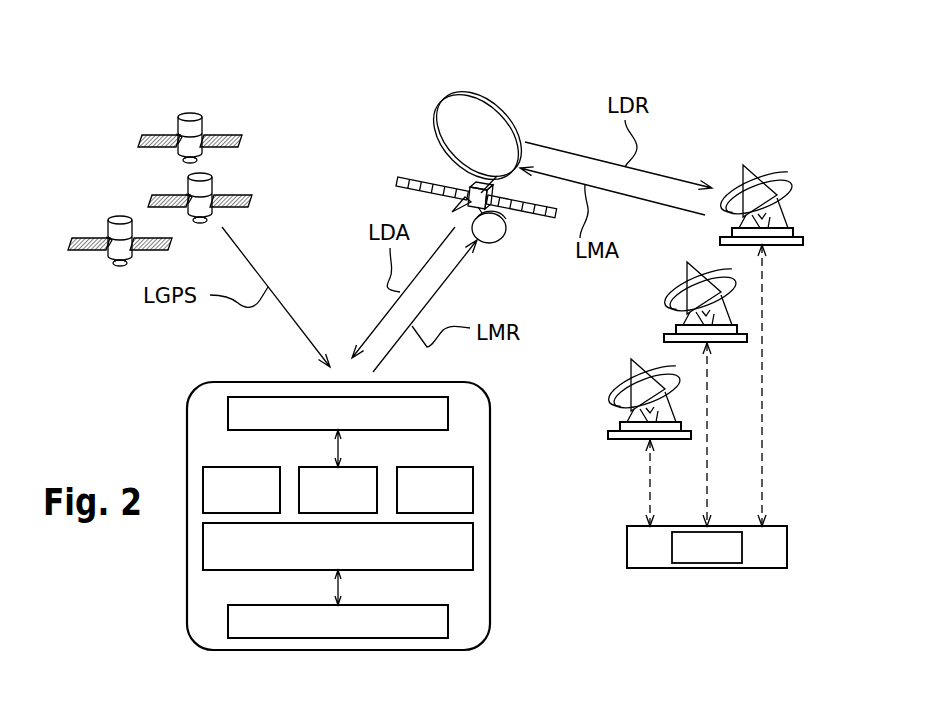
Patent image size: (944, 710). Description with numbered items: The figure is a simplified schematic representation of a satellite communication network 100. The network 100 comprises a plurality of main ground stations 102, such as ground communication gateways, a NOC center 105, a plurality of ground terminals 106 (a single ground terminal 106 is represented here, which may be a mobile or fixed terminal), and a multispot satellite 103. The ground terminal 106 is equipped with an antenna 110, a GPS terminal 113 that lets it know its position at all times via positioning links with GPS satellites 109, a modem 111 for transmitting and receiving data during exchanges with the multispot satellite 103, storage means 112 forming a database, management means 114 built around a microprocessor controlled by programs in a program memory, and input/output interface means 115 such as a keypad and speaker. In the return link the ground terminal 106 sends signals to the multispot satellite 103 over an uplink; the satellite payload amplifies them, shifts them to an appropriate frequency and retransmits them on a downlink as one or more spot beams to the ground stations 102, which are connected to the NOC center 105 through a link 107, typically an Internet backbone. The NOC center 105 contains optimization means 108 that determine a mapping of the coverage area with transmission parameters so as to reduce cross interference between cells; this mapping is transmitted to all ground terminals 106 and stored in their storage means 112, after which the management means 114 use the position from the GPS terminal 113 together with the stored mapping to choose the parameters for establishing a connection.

The network 100 is at (213, 82).
The main ground stations 102 is at (770, 182).
The multispot satellite 103 is at (455, 128).
The NOC center 105 is at (755, 569).
The ground terminal 106 is at (491, 598).
The ground network link 107 is at (762, 430).
The optimization means 108 is at (707, 547).
The satellites 109 is at (212, 186).
The antenna 110 is at (338, 413).
The modem 111 is at (338, 490).
The storage means 112 is at (435, 490).
The GPS terminal 113 is at (241, 490).
The management means 114 is at (338, 546).
The input/output interface means 115 is at (338, 621).